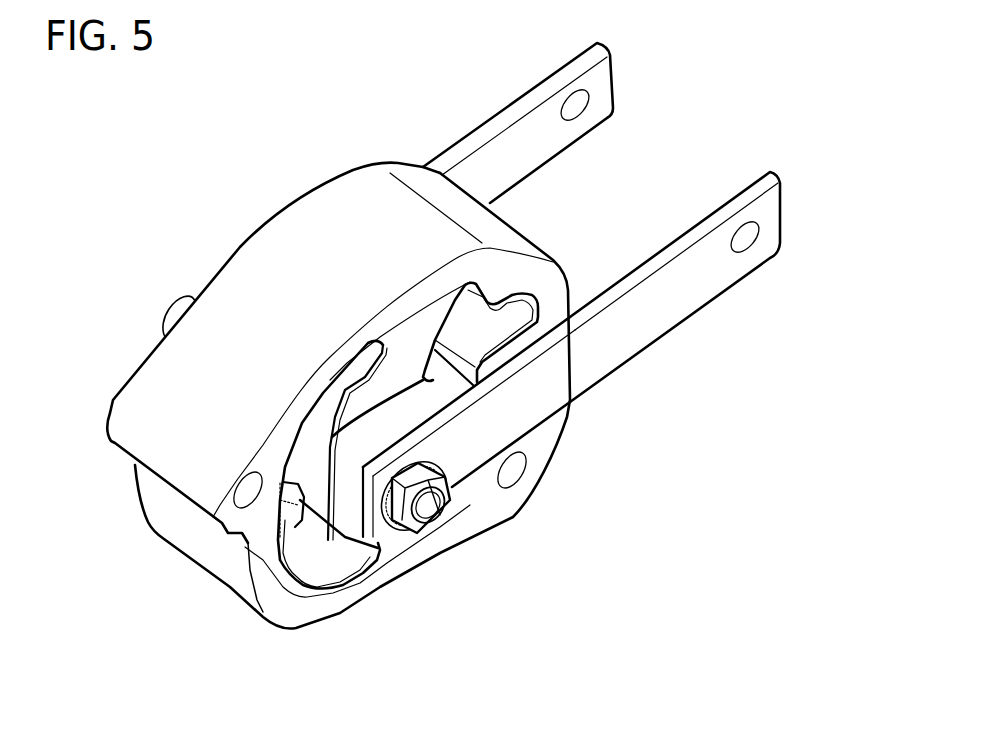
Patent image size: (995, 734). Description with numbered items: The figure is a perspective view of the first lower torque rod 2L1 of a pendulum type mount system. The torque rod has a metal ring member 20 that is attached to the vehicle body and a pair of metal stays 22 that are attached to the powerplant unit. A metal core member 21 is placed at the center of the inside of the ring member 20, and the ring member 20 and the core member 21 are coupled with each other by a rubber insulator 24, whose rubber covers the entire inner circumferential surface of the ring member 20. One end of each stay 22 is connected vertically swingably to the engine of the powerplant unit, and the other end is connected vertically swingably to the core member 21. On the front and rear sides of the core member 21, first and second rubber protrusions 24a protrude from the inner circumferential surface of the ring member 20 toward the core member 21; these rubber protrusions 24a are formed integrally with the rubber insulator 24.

The first lower torque rod 2L1 is at (207, 203).
The ring member 20 is at (195, 542).
The core member 21 is at (347, 510).
The stay 22 is at (513, 140).
The rubber insulator 24 is at (415, 357).
The rubber protrusion 24a is at (293, 517).